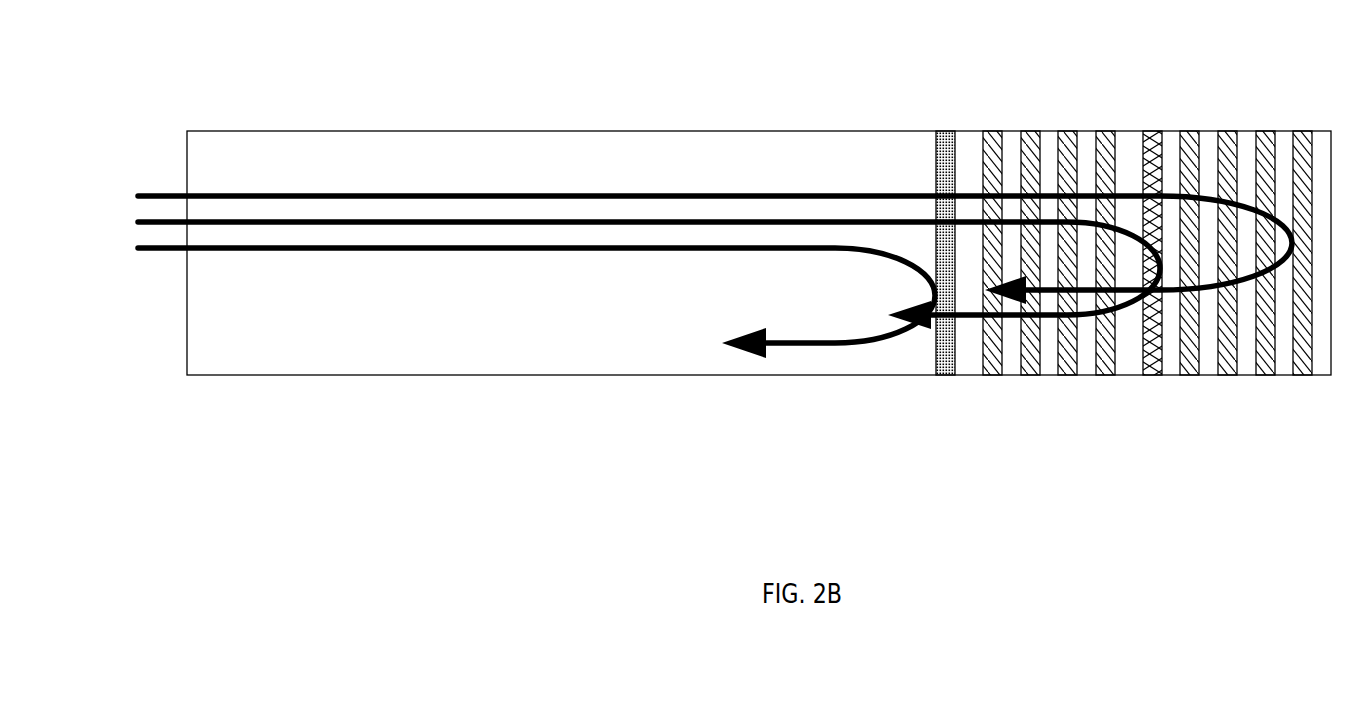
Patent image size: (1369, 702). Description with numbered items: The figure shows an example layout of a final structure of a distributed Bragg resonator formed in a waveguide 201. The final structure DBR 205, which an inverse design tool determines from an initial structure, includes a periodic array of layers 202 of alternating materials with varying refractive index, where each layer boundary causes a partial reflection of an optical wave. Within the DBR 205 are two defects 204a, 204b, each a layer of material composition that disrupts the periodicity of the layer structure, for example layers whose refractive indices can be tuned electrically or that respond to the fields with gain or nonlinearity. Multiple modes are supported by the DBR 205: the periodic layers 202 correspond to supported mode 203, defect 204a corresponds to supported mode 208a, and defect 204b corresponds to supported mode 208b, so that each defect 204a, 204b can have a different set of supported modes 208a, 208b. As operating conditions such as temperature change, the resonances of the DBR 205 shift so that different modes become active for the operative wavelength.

The waveguide 201 is at (380, 361).
The periodic layers 202 is at (1046, 130).
The modes 203 is at (542, 193).
The defect 204a is at (1150, 130).
The defect 204b is at (1027, 50).
The final structure DBR 205 is at (1126, 258).
The supported mode 208a is at (302, 223).
The supported mode 208b is at (667, 228).